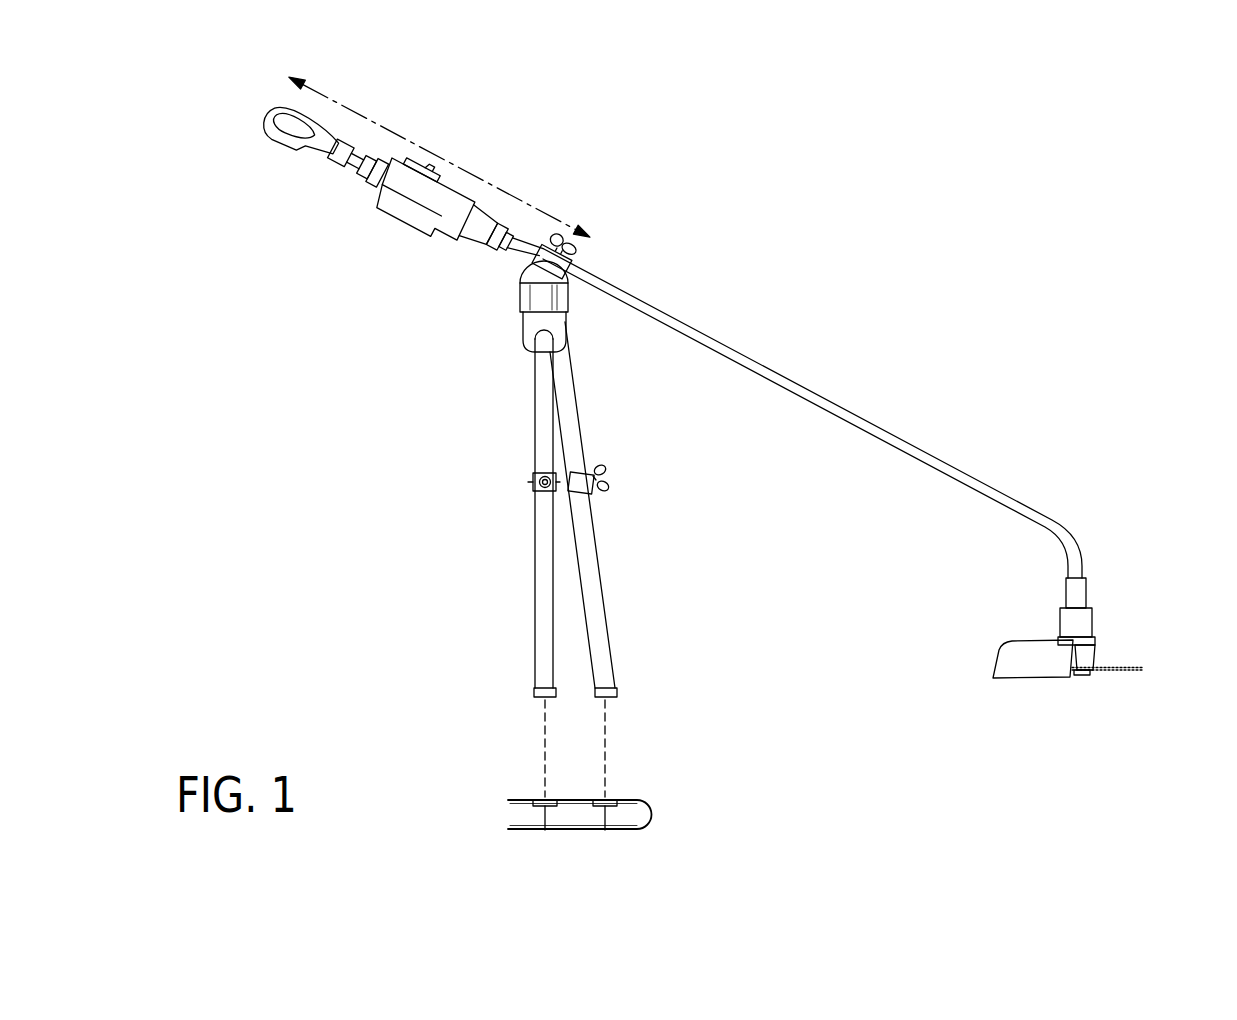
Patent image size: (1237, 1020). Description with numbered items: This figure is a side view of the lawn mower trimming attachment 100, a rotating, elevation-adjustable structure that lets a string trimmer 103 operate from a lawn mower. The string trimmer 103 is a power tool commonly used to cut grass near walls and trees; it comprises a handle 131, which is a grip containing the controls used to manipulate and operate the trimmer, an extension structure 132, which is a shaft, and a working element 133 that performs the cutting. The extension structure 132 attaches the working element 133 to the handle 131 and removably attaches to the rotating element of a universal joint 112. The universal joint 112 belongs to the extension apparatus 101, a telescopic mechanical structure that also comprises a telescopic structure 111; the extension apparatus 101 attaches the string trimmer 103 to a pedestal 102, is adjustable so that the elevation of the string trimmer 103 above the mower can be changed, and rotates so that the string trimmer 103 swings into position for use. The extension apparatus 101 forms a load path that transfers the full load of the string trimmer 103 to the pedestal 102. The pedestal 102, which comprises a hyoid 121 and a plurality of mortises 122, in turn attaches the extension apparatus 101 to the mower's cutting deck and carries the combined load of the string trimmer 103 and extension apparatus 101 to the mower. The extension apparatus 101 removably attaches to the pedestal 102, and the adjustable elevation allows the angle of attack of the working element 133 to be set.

The lawn mower trimming attachment 100 is at (960, 149).
The extension apparatus 101 is at (636, 618).
The pedestal 102 is at (627, 835).
The string trimmer 103 is at (768, 352).
The telescopic structure 111 is at (537, 549).
The universal joint 112 is at (520, 322).
The hyoid 121 is at (650, 812).
The mortises 122 is at (605, 829).
The handle 131 is at (364, 152).
The extension structure 132 is at (896, 434).
The working element 133 is at (1107, 643).